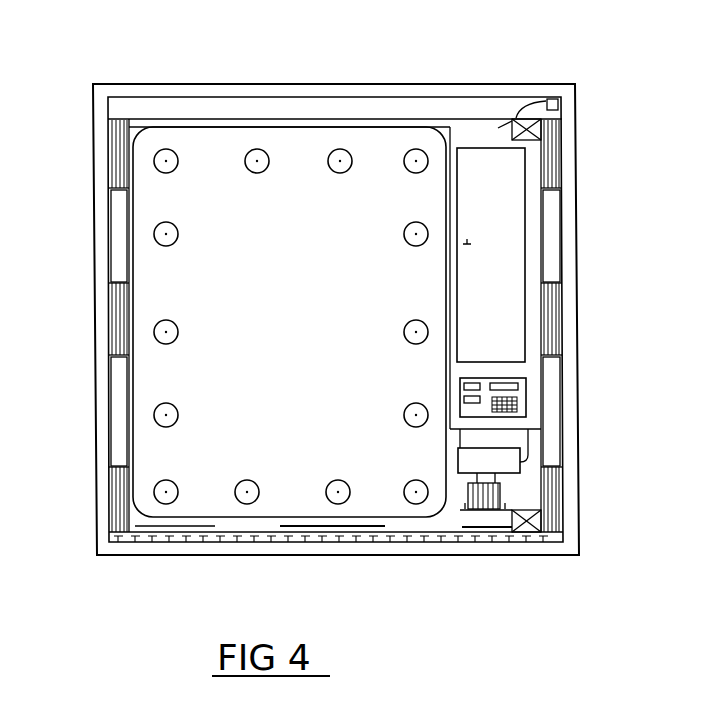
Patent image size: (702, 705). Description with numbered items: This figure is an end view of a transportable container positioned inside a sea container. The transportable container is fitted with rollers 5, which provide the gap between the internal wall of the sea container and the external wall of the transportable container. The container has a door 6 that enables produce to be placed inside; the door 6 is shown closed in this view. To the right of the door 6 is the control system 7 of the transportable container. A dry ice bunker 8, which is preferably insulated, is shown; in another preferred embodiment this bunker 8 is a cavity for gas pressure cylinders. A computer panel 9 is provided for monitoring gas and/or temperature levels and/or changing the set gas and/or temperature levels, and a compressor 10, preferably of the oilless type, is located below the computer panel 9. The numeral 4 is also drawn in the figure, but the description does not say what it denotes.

The side wall channel 4 is at (113, 333).
The rollers 5 is at (132, 542).
The door 6 is at (192, 194).
The control system 7 is at (540, 90).
The dry ice bunker 8 is at (518, 282).
The computer panel 9 is at (520, 390).
The compressor 10 is at (476, 514).